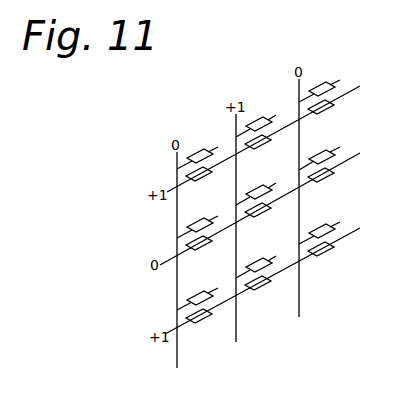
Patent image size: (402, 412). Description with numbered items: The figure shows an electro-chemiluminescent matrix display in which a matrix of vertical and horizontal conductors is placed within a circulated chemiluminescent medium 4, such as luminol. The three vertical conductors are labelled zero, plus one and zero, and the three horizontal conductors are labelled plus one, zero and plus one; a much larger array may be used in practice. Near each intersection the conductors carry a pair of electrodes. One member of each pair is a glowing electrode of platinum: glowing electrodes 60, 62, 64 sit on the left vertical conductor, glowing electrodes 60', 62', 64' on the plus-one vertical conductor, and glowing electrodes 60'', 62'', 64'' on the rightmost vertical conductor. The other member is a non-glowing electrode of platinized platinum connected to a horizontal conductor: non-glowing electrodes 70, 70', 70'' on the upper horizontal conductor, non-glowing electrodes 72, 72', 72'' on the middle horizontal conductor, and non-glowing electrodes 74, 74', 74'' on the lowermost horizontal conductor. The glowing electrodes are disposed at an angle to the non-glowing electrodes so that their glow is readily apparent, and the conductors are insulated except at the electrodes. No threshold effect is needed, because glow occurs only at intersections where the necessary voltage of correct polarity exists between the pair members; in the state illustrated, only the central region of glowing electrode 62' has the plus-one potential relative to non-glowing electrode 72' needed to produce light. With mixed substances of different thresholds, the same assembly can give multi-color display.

The circulated chemiluminescent medium 4 is at (201, 84).
The glowing electrode 60 is at (204, 154).
The glowing electrode 60' is at (265, 120).
The glowing electrode 60'' is at (329, 84).
The glowing electrode 62 is at (204, 223).
The glowing electrode 62' is at (265, 188).
The glowing electrode 62'' is at (329, 152).
The glowing electrode 64 is at (204, 296).
The glowing electrode 64' is at (265, 261).
The glowing electrode 64'' is at (329, 226).
The non-glowing electrode 70 is at (202, 181).
The non-glowing electrode 70' is at (267, 147).
The non-glowing electrode 70'' is at (331, 112).
The non-glowing electrode 72 is at (202, 250).
The non-glowing electrode 72' is at (267, 215).
The non-glowing electrode 72'' is at (331, 180).
The non-glowing electrode 74 is at (202, 323).
The non-glowing electrode 74' is at (267, 288).
The non-glowing electrode 74'' is at (331, 254).